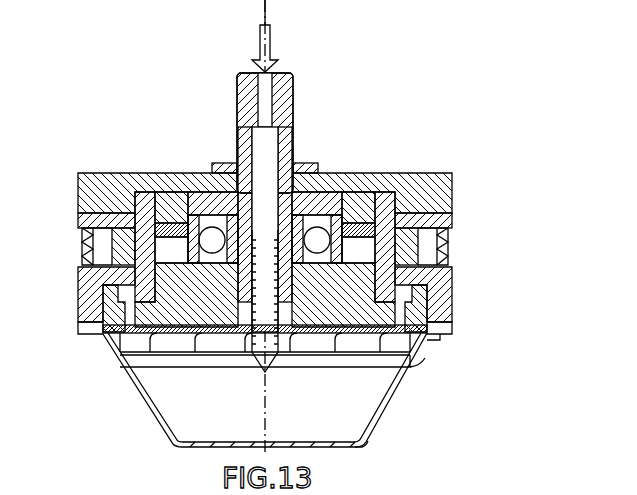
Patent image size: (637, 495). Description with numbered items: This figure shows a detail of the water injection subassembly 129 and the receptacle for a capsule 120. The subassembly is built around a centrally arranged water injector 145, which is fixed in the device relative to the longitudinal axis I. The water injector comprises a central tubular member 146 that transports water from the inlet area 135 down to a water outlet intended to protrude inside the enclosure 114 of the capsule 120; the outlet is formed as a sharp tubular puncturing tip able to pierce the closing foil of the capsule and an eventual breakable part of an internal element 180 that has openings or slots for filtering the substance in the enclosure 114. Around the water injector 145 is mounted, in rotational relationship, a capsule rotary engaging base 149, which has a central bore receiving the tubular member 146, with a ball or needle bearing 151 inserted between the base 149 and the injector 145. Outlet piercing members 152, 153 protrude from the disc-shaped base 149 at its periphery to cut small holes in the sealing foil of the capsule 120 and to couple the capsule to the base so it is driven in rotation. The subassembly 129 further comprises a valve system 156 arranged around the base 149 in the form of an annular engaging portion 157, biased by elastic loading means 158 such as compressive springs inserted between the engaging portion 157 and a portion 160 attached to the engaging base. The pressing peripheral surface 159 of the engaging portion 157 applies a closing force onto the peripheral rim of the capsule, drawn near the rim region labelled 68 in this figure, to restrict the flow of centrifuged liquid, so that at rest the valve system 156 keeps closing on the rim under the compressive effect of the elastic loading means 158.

The longitudinal axis I is at (268, 13).
The inlet area 135 is at (262, 72).
The water injector 145 is at (296, 100).
The central tubular member 146 is at (226, 186).
The ball or needle bearing 151 is at (330, 184).
The water injection subassembly 129 is at (477, 173).
The portion attached to the engaging base 160 is at (78, 221).
The elastic loading means 158 is at (82, 244).
The annular engaging portion 157 is at (78, 278).
The valve system 156 is at (78, 295).
The capsule rotary engaging base 149 is at (133, 303).
The pressing peripheral surface 159 is at (105, 333).
The outlet piercing member 153 is at (418, 310).
The outlet piercing member 152 is at (122, 352).
The enclosure 114 is at (158, 410).
The capsule 120 is at (386, 427).
The internal element 180 is at (422, 362).
The gasket 68 is at (440, 342).